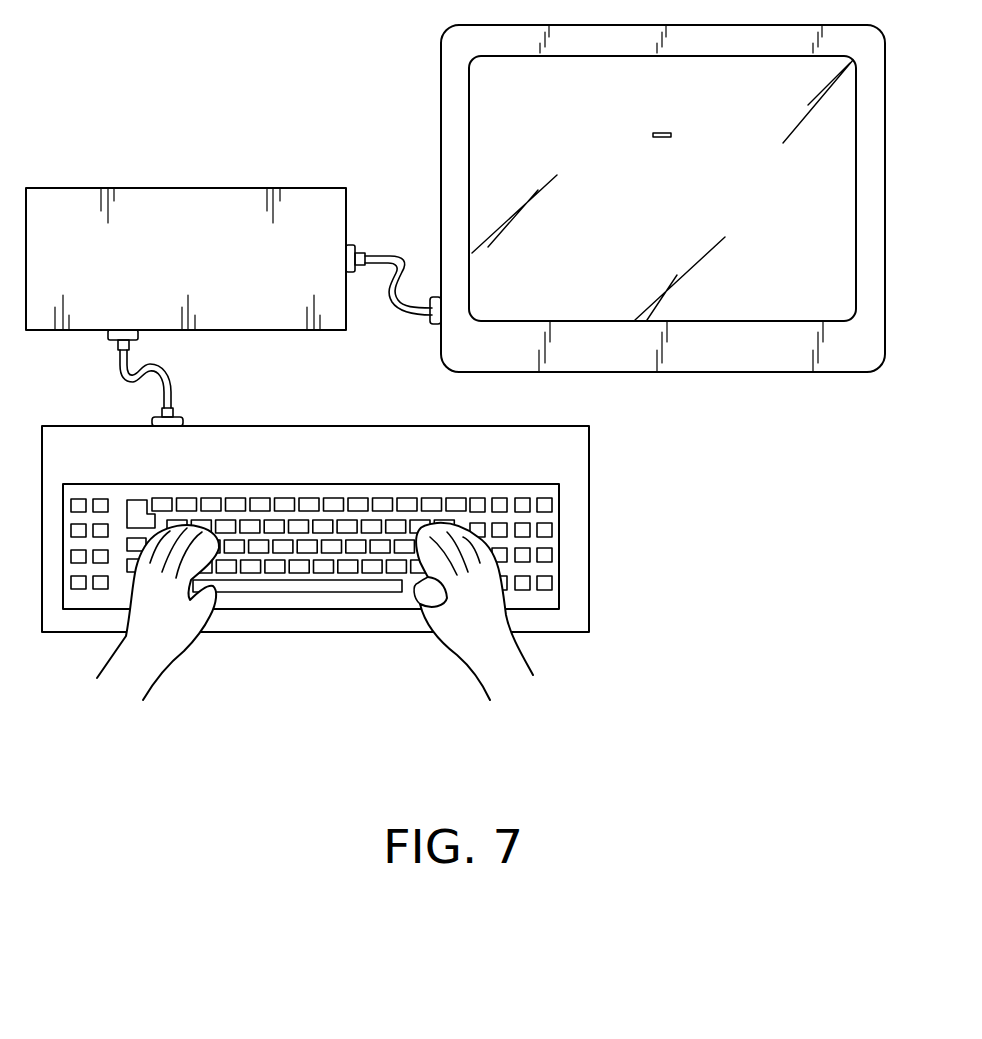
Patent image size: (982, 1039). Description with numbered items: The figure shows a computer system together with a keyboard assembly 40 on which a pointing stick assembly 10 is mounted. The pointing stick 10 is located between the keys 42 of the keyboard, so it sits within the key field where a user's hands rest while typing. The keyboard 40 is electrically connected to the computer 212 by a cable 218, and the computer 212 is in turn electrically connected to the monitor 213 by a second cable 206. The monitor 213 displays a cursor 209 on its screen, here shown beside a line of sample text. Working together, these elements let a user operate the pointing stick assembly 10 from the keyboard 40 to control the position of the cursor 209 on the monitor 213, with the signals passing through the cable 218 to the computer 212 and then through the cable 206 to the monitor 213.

The pointing stick assembly 10 is at (300, 557).
The keyboard assembly 40 is at (378, 501).
The keys 42 is at (405, 503).
The cable 206 is at (406, 264).
The cursor 209 is at (662, 141).
The computer 212 is at (212, 187).
The monitor 213 is at (440, 140).
The cable 218 is at (122, 380).